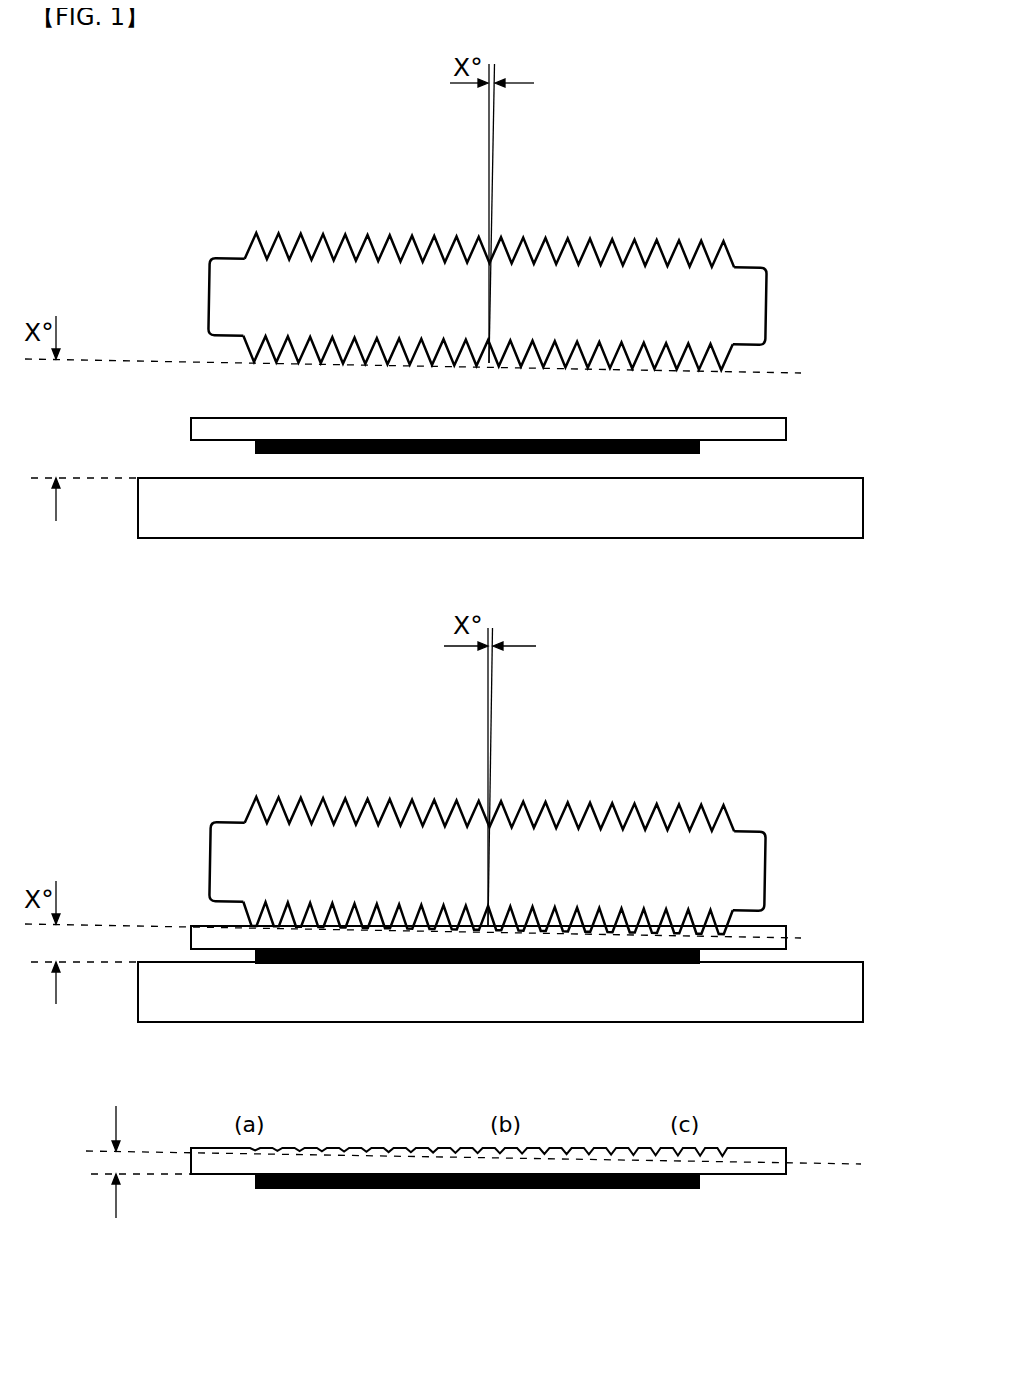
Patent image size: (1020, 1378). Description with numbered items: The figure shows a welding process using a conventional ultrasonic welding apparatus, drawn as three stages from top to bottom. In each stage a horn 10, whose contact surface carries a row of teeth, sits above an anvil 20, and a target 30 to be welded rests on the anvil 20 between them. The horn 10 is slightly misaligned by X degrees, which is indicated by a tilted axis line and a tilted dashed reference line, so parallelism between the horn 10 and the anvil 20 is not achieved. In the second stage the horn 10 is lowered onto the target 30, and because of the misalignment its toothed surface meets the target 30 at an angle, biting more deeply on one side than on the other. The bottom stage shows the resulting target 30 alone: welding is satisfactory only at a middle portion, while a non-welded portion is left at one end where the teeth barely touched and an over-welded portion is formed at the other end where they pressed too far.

The horn 10 is at (766, 288).
The anvil 20 is at (742, 537).
The target to be welded 30 is at (803, 432).